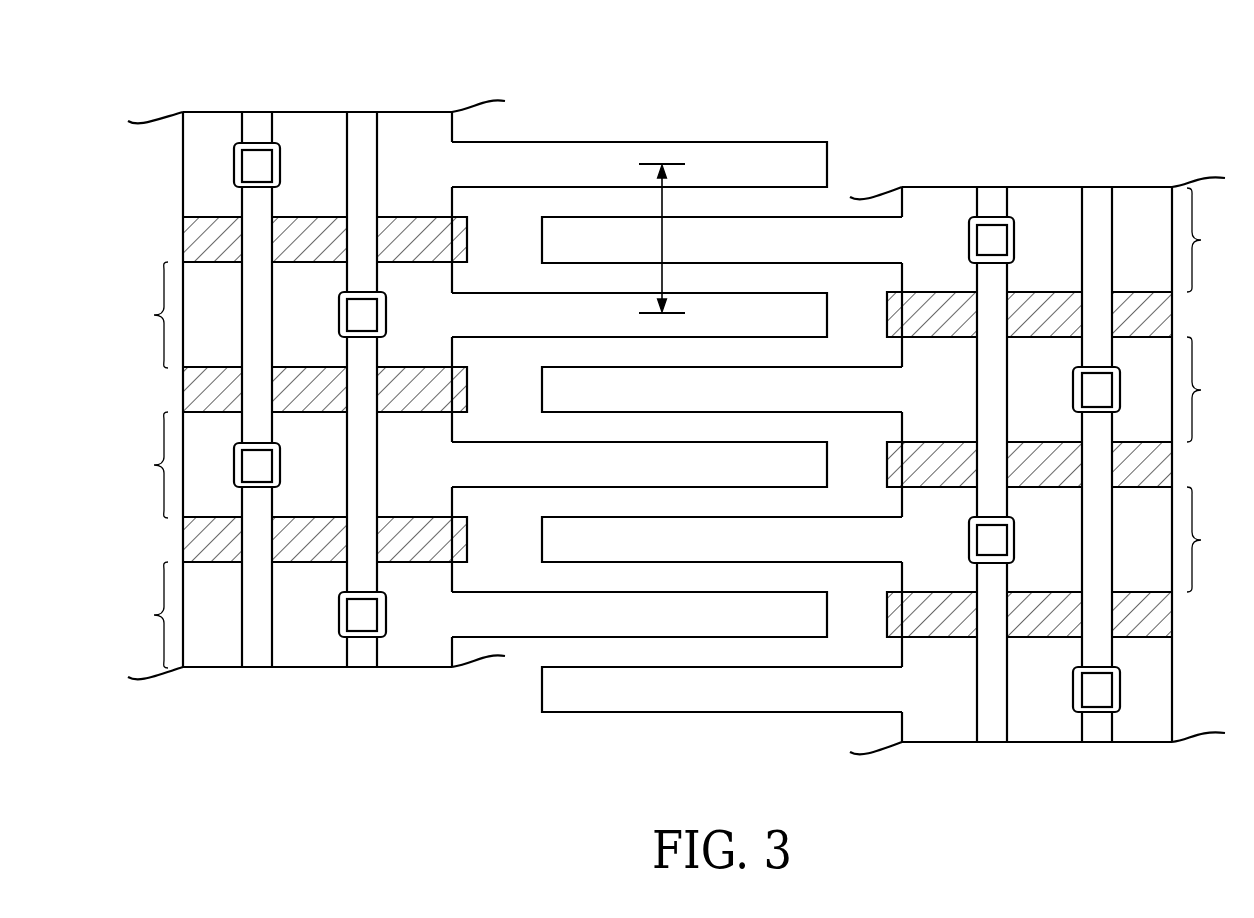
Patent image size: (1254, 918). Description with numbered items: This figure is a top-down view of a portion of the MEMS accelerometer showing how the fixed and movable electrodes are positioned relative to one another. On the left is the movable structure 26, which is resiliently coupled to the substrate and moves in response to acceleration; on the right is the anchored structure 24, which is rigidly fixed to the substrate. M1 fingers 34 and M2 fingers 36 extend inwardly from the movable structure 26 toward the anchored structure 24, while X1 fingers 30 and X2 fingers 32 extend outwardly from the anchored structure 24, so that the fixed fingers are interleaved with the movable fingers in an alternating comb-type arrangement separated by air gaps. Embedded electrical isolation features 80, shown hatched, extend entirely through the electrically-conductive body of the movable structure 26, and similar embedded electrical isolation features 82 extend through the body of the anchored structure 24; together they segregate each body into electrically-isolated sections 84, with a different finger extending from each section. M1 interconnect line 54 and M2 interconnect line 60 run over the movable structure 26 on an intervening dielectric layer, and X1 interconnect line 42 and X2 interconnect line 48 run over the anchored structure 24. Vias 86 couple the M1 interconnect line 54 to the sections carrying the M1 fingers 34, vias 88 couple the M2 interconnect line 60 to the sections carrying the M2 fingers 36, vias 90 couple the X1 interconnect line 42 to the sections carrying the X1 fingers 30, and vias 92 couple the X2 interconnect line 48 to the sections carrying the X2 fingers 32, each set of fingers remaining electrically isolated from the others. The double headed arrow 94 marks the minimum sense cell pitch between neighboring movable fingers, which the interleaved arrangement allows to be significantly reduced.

The anchored structure 24 is at (1147, 166).
The movable structure 26 is at (207, 99).
The X1 fingers 30 is at (602, 254).
The X2 fingers 32 is at (602, 404).
The M1 fingers 34 is at (797, 179).
The M2 fingers 36 is at (797, 329).
The X1 interconnect line 42 is at (993, 734).
The X2 interconnect line 48 is at (1095, 195).
The M1 interconnect line 54 is at (258, 668).
The M2 interconnect line 60 is at (360, 118).
The embedded electrical isolation features 80 is at (411, 222).
The embedded electrical isolation features 82 is at (935, 302).
The electrically-isolated sections 84 is at (677, 428).
The vias 86 is at (248, 165).
The vias 88 is at (352, 315).
The vias 90 is at (1000, 239).
The vias 92 is at (1088, 391).
The double headed arrow 94 is at (664, 236).